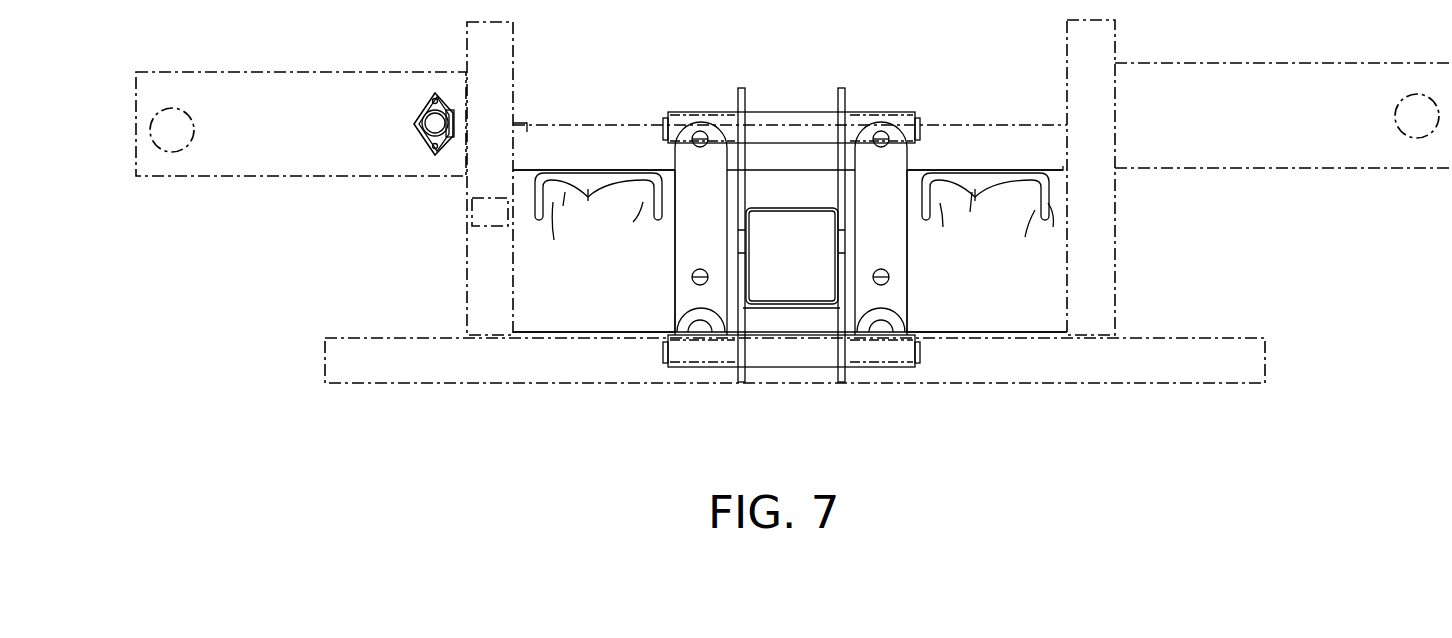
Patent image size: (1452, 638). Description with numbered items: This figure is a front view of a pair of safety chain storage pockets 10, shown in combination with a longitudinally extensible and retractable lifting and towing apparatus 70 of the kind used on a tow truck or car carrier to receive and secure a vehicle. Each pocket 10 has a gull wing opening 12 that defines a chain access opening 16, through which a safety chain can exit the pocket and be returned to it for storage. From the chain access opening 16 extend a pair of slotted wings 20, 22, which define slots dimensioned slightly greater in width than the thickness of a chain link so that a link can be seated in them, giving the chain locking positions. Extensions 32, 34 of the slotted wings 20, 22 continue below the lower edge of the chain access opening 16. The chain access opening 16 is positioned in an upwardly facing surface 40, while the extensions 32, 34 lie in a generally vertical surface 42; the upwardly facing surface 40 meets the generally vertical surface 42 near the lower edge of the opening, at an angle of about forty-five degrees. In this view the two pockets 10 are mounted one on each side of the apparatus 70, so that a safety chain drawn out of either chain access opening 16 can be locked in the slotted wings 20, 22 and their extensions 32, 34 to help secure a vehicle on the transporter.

The safety chain storage pocket 10 is at (587, 406).
The gull wing opening 12 is at (590, 200).
The chain access opening 16 is at (771, 217).
The slotted wing 20 is at (809, 235).
The slotted wing 22 is at (632, 226).
The extension of slotted wing 32 is at (535, 223).
The extension of slotted wing 34 is at (655, 218).
The upwardly facing surface 40 is at (525, 187).
The generally vertical surface 42 is at (605, 312).
The lifting and towing apparatus 70 is at (768, 412).